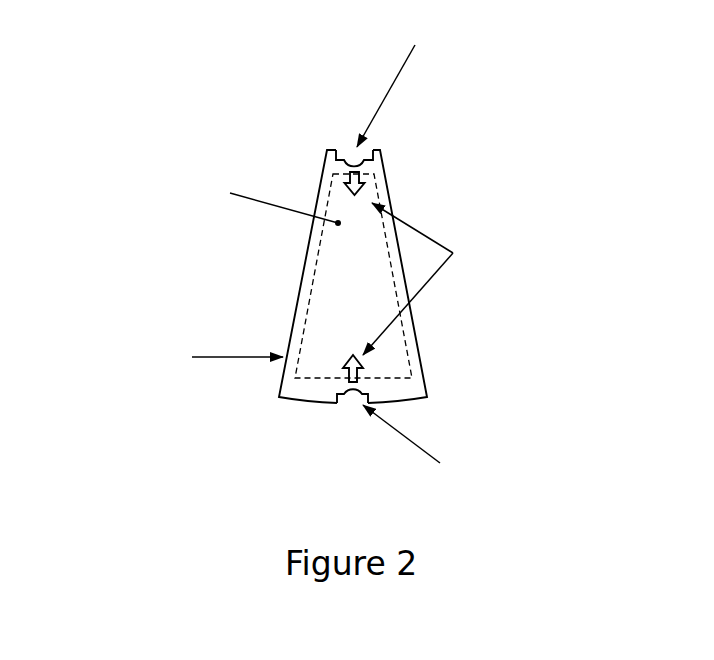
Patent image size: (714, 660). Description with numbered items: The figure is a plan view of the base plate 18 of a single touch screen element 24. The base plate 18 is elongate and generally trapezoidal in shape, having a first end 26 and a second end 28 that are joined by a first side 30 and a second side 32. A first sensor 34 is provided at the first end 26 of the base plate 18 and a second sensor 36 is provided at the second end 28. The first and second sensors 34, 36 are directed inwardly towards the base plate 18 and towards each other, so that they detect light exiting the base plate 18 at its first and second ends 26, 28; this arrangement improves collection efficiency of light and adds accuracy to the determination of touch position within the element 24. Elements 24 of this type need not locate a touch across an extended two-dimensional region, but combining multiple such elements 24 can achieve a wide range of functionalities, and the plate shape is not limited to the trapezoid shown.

The base plate 18 is at (249, 266).
The touch screen element 24 is at (319, 262).
The first end 26 is at (383, 94).
The second end 28 is at (390, 446).
The first side 30 is at (279, 265).
The second side 32 is at (425, 312).
The first sensor 34 is at (348, 148).
The second sensor 36 is at (346, 406).